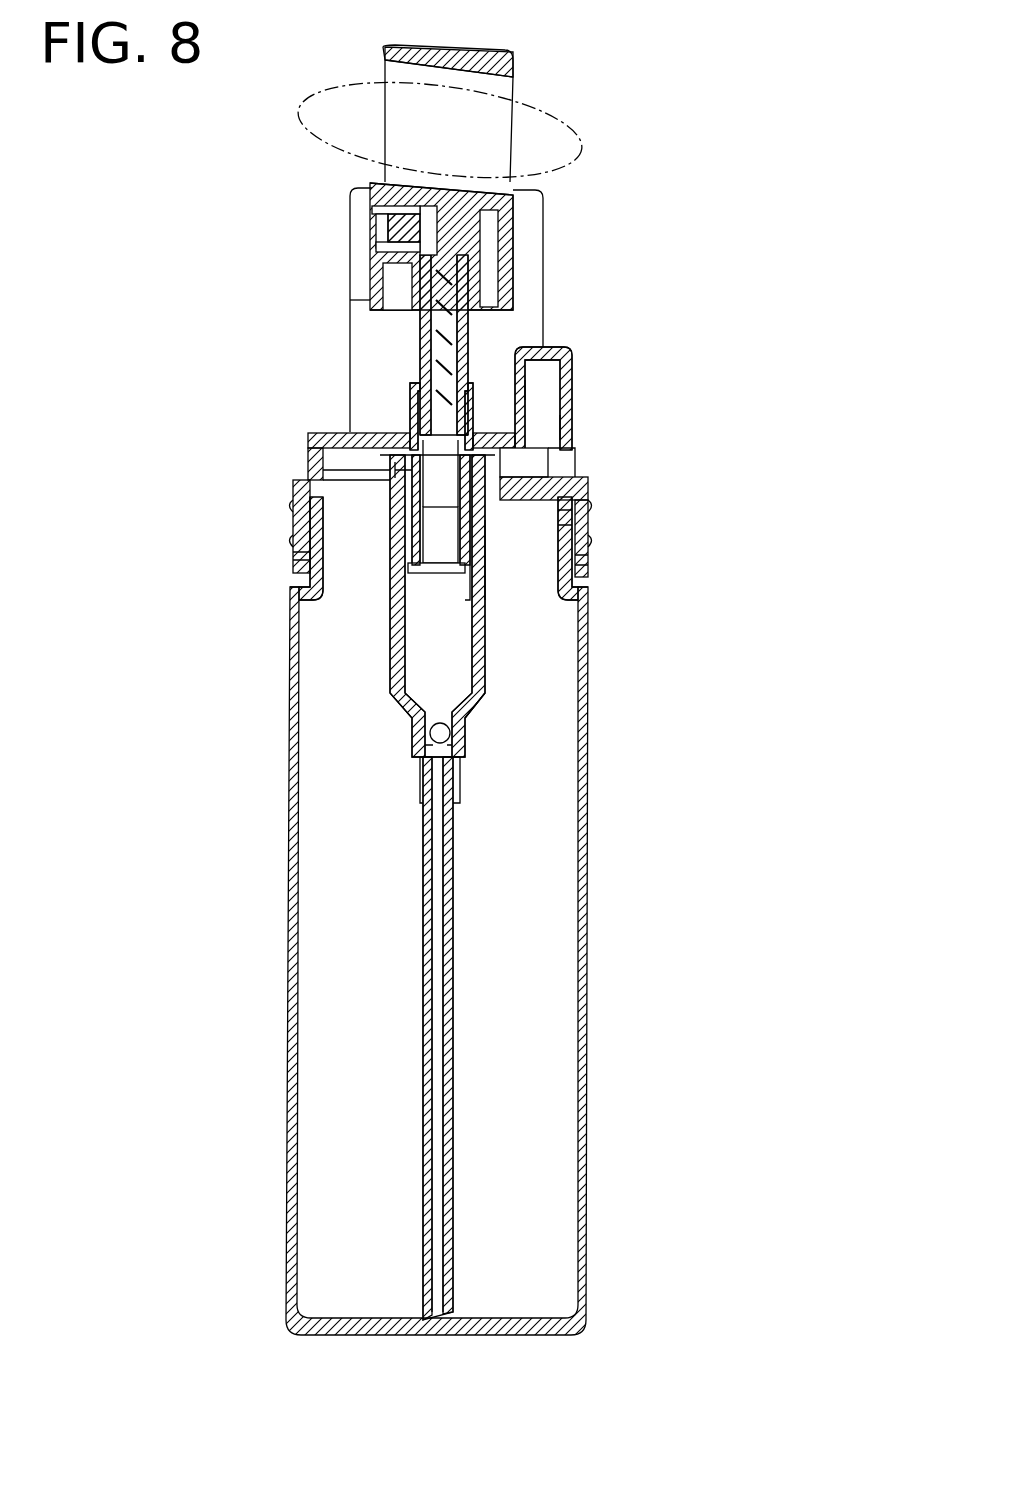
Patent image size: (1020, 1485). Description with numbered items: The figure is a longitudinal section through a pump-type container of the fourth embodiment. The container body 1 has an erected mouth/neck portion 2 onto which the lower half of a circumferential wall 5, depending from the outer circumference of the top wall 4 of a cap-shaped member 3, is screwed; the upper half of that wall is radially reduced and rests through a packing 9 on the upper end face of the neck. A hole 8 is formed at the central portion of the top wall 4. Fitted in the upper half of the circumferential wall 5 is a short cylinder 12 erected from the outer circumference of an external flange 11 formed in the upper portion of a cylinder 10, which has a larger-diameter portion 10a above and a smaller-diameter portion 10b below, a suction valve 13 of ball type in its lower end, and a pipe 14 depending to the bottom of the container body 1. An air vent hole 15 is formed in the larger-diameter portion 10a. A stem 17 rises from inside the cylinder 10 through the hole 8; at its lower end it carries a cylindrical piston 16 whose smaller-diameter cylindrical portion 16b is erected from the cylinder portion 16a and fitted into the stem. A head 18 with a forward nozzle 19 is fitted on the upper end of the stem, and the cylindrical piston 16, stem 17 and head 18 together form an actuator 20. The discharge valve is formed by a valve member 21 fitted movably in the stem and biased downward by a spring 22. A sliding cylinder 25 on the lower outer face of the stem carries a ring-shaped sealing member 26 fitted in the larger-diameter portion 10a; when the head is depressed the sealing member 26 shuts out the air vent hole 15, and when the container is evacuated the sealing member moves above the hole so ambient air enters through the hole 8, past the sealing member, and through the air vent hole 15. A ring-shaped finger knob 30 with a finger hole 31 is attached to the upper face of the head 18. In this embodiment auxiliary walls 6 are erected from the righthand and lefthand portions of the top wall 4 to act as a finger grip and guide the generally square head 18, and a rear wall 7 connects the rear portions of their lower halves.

The container body 1 is at (278, 942).
The mouth/neck portion 2 is at (300, 618).
The cap-shaped member 3 is at (600, 503).
The top wall 4 is at (340, 432).
The circumferential wall 5 is at (293, 560).
The auxiliary wall 6 is at (535, 272).
The rear wall 7 is at (565, 350).
The hole 8 is at (412, 418).
The packing 9 is at (590, 558).
The cylinder 10 is at (507, 667).
The larger-diameter portion 10a is at (505, 560).
The smaller-diameter portion 10b is at (487, 700).
The external flange 11 is at (577, 520).
The short cylinder 12 is at (560, 455).
The suction valve 13 is at (455, 735).
The pipe 14 is at (453, 988).
The air vent hole 15 is at (398, 520).
The cylindrical piston 16 is at (432, 568).
The cylinder portion 16a is at (487, 607).
The smaller-diameter cylindrical portion 16b is at (395, 472).
The stem 17 is at (383, 291).
The head 18 is at (510, 233).
The nozzle 19 is at (390, 225).
The actuator 20 is at (395, 352).
The valve member 21 is at (530, 427).
The spring 22 is at (466, 335).
The sliding cylinder 25 is at (520, 393).
The sealing member 26 is at (405, 512).
The finger knob 30 is at (493, 46).
The finger hole 31 is at (530, 102).